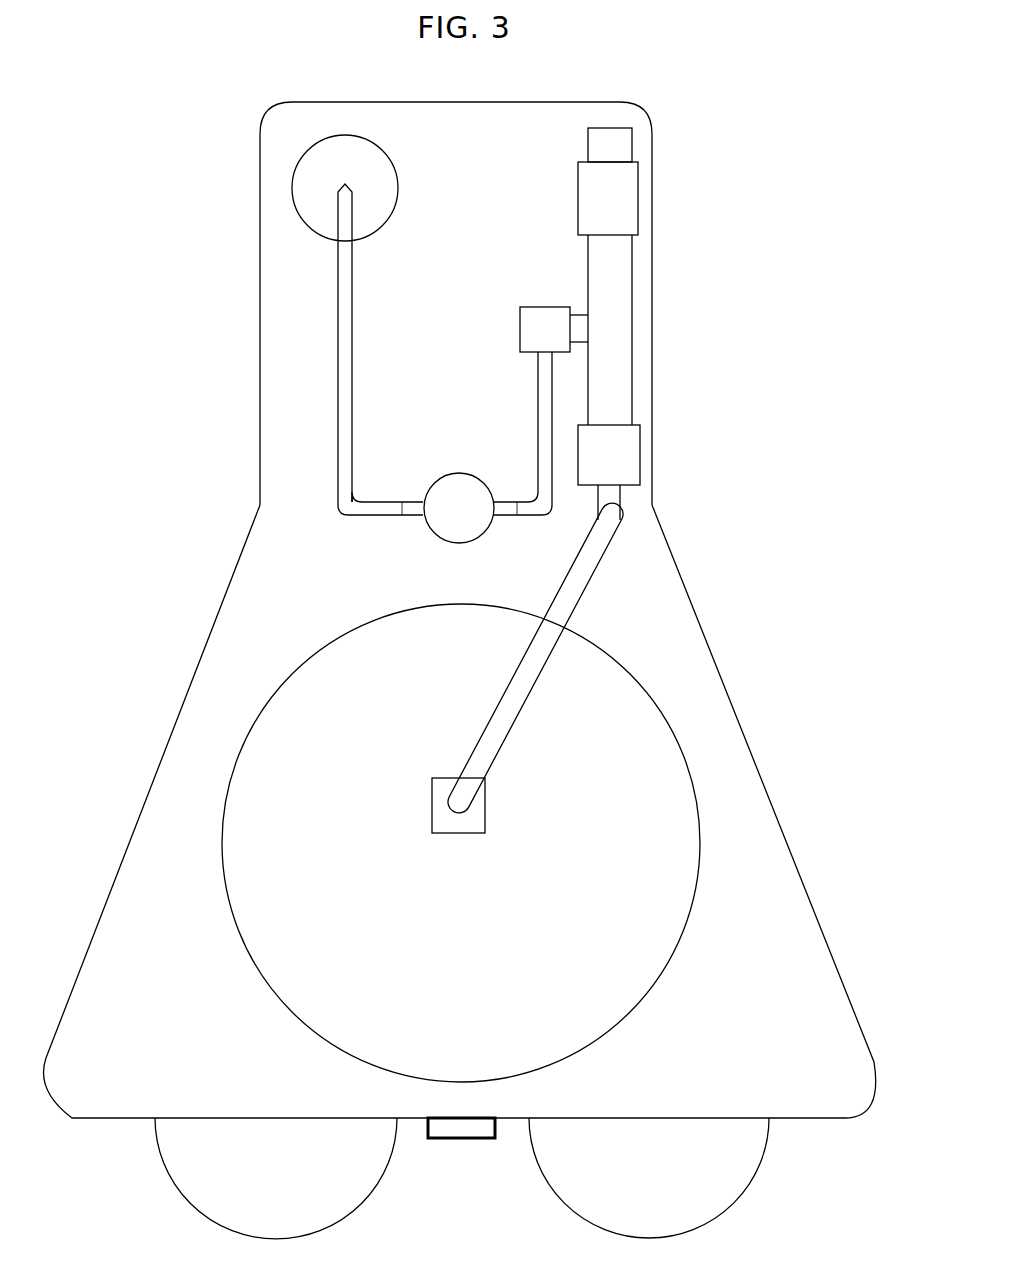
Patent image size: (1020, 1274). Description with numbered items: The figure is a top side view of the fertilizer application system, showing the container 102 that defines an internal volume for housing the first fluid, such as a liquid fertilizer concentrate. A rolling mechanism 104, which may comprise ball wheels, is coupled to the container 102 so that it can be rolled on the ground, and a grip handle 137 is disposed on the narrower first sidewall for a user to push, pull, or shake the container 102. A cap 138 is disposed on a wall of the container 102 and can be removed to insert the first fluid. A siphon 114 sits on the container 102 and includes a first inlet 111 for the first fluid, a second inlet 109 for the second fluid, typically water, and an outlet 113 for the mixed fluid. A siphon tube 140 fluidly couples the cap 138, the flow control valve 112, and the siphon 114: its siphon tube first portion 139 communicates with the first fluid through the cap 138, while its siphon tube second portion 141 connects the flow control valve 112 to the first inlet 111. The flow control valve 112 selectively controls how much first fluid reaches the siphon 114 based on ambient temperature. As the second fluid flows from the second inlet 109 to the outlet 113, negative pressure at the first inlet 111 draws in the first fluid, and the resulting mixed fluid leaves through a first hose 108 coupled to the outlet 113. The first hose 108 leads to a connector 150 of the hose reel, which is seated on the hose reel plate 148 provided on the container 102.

The container 102 is at (198, 659).
The rolling mechanism 104 is at (462, 1178).
The first hose 108 is at (585, 588).
The second inlet 109 is at (626, 140).
The first inlet 111 is at (575, 328).
The flow control valve 112 is at (459, 508).
The outlet 113 is at (612, 500).
The siphon 114 is at (608, 290).
The grip handle 137 is at (465, 1130).
The cap 138 is at (345, 188).
The siphon tube first portion 139 is at (342, 360).
The siphon tube 140 is at (525, 488).
The siphon tube second portion 141 is at (545, 447).
The hose reel plate 148 is at (255, 752).
The connector 150 is at (470, 818).